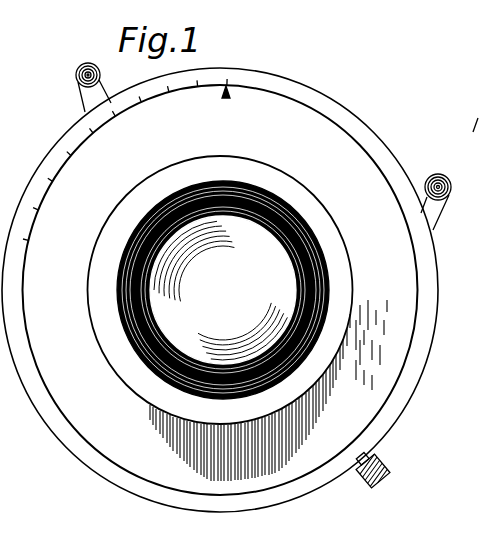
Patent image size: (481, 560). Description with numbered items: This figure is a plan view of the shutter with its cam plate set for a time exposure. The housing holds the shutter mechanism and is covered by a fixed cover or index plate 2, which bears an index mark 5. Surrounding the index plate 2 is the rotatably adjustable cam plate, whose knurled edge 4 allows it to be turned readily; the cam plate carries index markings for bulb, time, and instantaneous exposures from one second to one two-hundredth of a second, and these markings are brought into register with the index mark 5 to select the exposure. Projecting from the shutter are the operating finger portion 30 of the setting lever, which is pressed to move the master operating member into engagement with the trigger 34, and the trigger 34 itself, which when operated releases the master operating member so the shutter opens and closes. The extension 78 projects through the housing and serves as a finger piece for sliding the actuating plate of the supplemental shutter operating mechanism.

The fixed cover or index plate 2 is at (400, 297).
The knurled edge 4 is at (58, 437).
The index mark 5 is at (230, 95).
The operating finger portion 30 is at (444, 212).
The trigger 34 is at (92, 95).
The extension 78 is at (357, 470).